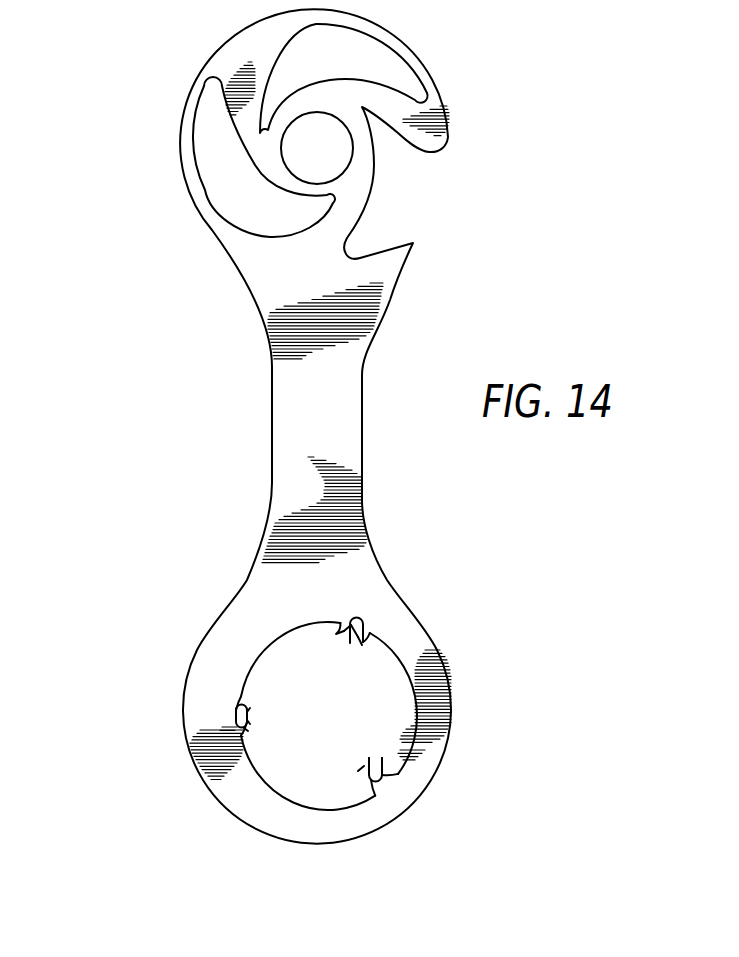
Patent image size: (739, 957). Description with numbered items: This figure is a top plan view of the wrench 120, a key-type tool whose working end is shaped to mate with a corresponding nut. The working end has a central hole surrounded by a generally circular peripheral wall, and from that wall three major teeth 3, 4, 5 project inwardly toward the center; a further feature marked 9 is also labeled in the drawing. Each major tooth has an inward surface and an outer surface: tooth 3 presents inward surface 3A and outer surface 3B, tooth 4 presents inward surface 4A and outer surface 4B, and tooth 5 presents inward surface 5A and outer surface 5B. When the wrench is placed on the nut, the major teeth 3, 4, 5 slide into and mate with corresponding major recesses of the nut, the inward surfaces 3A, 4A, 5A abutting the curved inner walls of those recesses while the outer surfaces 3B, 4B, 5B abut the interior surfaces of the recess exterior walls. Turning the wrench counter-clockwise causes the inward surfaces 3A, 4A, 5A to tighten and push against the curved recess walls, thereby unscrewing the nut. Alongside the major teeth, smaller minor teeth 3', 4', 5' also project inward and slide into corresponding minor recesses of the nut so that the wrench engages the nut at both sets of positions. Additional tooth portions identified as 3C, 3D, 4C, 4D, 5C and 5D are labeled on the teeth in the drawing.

The wrench 120 is at (165, 408).
The inner ring opening 9 is at (270, 668).
The major tooth 3 is at (397, 617).
The inward surface of tooth 3A is at (352, 647).
The outer surface of tooth 3B is at (365, 642).
The first tab segment C 3C is at (343, 636).
The first tab segment D 3D is at (336, 634).
The minor tooth 3' is at (319, 654).
The major tooth 4 is at (418, 791).
The inward surface of tooth 4A is at (362, 772).
The outer surface of tooth 4B is at (360, 777).
The second tab segment C 4C is at (370, 764).
The second tab segment D 4D is at (380, 760).
The minor tooth 4' is at (365, 730).
The major tooth 5 is at (198, 677).
The inward surface of tooth 5A is at (245, 709).
The outer surface of tooth 5B is at (222, 720).
The third tab segment C 5C is at (246, 727).
The third tab segment D 5D is at (247, 735).
The minor tooth 5' is at (278, 745).